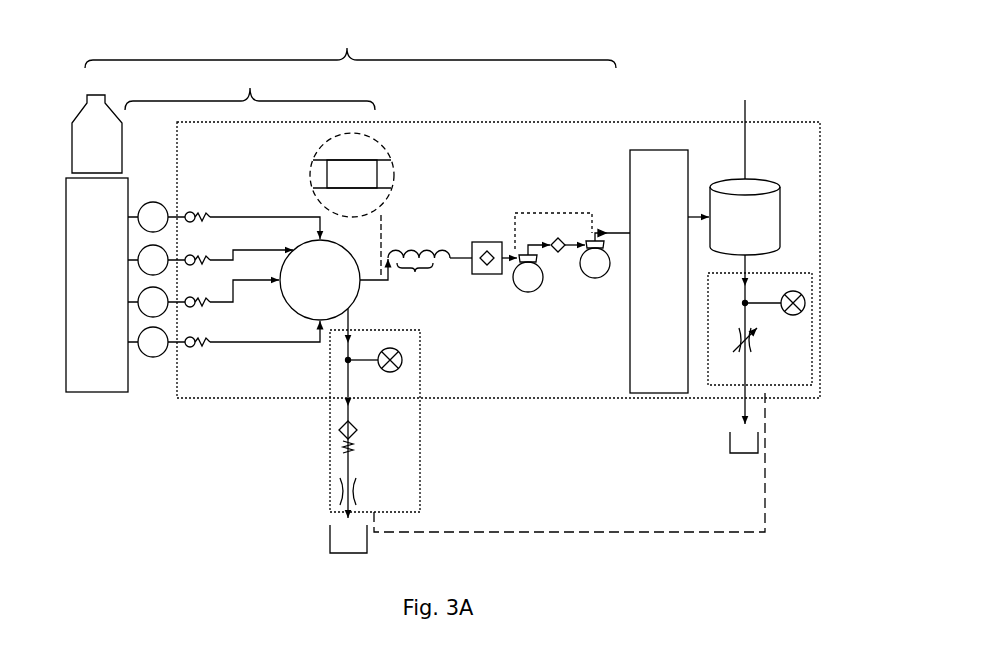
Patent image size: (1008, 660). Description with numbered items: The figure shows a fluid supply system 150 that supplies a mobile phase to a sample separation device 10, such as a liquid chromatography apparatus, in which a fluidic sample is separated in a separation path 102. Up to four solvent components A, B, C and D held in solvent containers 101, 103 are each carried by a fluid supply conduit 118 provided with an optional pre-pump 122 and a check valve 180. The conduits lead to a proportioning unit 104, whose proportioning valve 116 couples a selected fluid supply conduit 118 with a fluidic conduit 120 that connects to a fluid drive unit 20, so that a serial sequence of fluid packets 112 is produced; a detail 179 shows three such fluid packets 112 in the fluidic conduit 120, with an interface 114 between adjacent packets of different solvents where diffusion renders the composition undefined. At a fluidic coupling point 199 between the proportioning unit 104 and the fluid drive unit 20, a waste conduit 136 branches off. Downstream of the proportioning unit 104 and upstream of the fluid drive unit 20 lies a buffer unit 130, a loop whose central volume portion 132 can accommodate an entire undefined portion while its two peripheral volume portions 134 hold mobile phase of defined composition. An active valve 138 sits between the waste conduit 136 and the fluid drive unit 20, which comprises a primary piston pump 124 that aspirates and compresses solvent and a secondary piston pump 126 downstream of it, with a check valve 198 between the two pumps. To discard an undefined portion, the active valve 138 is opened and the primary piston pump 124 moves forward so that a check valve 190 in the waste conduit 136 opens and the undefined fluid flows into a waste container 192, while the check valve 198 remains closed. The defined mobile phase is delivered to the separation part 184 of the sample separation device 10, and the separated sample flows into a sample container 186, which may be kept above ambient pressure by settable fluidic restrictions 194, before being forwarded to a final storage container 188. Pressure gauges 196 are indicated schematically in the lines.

The sample separation device 10 is at (764, 108).
The fluid drive unit 20 is at (549, 213).
The solvent container 101 is at (85, 275).
The solvent container 103 is at (100, 393).
The separation path 102 is at (605, 232).
The proportioning unit 104 is at (250, 87).
The fluid packet 112 is at (323, 176).
The interface 114 is at (322, 166).
The proportioning valve 116 is at (189, 150).
The fluid supply conduit 118 is at (240, 247).
The fluidic conduit 120 is at (353, 162).
The pre-pump 122 is at (146, 340).
The primary piston pump 124 is at (530, 292).
The secondary piston pump 126 is at (596, 278).
The buffer unit 130 is at (418, 249).
The central volume portion 132 is at (418, 281).
The peripheral volume portion 134 is at (386, 285).
The waste conduit 136 is at (345, 460).
The active valve 138 is at (482, 241).
The fluid supply system 150 is at (350, 42).
The detail 179 is at (387, 147).
The check valve 180 is at (188, 256).
The separation part 184 is at (658, 157).
The sample container 186 is at (755, 220).
The final storage container 188 is at (742, 456).
The check valve 190 is at (357, 427).
The waste container 192 is at (330, 535).
The fluidic restriction 194 is at (357, 485).
The pressure gauge 196 is at (402, 360).
The check valve 198 is at (557, 253).
The fluidic coupling point 199 is at (337, 310).